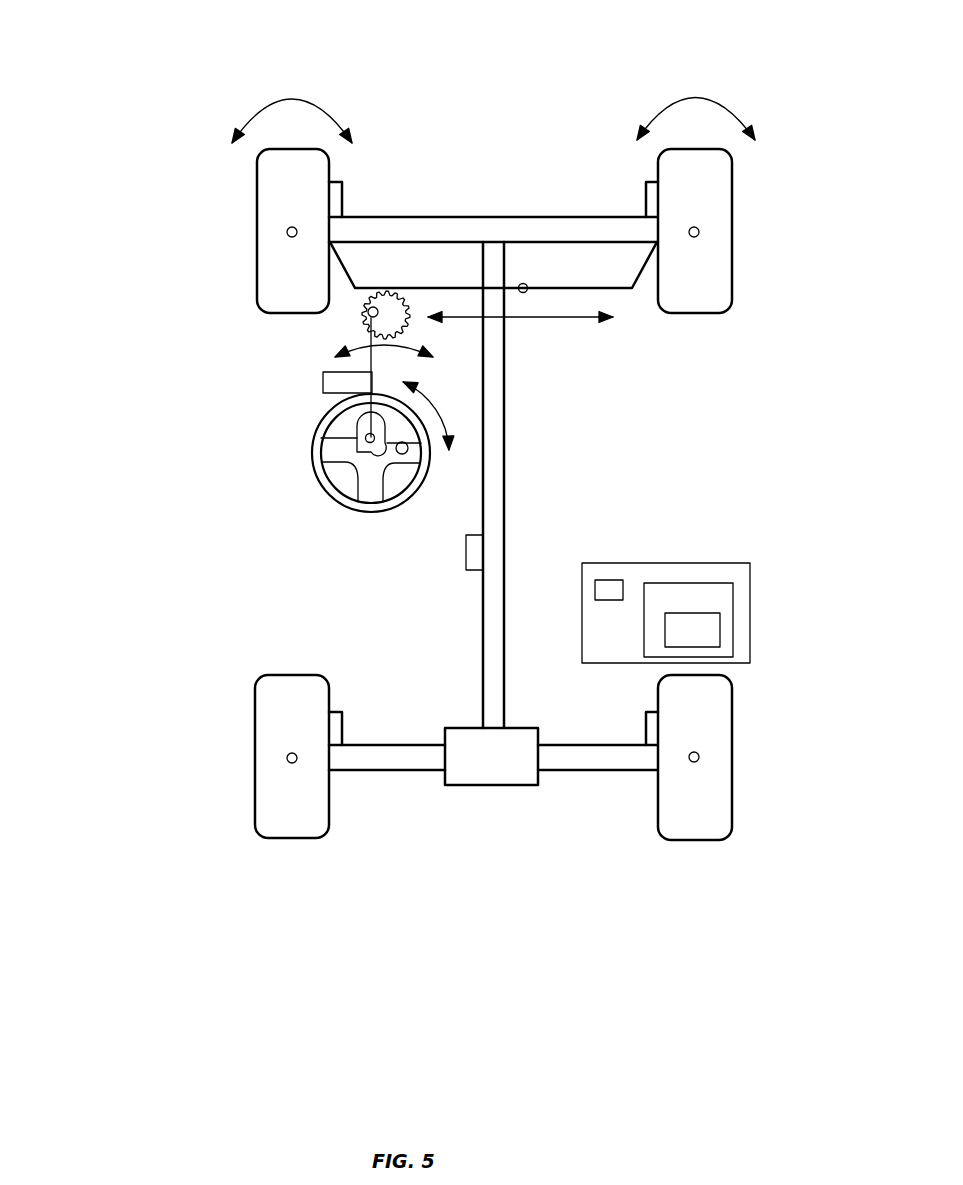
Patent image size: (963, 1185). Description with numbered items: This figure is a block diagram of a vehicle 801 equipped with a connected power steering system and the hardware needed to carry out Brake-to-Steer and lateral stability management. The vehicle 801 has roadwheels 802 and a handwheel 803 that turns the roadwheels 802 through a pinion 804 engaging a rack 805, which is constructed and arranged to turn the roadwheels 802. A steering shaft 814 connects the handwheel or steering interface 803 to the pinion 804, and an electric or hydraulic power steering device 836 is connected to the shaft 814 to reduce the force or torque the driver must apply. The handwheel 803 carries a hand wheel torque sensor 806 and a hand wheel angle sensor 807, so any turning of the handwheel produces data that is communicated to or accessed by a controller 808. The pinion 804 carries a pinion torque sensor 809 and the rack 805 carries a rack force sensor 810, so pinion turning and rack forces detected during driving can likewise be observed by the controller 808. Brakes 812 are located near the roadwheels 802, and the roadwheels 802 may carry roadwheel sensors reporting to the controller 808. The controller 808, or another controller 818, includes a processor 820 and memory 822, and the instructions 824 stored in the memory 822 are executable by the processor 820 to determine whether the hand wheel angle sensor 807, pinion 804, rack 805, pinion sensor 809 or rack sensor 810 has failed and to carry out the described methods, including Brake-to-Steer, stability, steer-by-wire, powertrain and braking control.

The vehicle 801 is at (800, 176).
The roadwheels 802 is at (295, 753).
The handwheel 803 is at (345, 498).
The pinion 804 is at (364, 326).
The rack 805 is at (452, 288).
The hand wheel torque sensor 806 is at (325, 453).
The hand wheel angle sensor 807 is at (366, 437).
The controller 808 is at (483, 583).
The pinion torque sensor 809 is at (368, 313).
The rack force sensor 810 is at (523, 284).
The brakes 812 is at (344, 196).
The steering shaft 814 is at (330, 367).
The controller 818 is at (752, 632).
The processor 820 is at (611, 580).
The memory 822 is at (735, 588).
The instructions 824 is at (720, 613).
The power steering device 836 is at (323, 385).